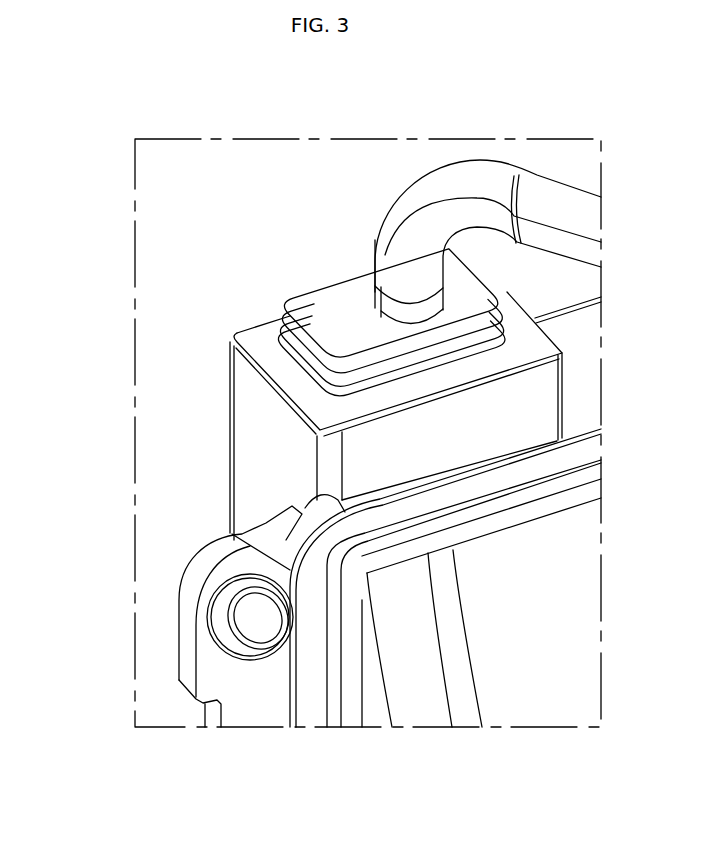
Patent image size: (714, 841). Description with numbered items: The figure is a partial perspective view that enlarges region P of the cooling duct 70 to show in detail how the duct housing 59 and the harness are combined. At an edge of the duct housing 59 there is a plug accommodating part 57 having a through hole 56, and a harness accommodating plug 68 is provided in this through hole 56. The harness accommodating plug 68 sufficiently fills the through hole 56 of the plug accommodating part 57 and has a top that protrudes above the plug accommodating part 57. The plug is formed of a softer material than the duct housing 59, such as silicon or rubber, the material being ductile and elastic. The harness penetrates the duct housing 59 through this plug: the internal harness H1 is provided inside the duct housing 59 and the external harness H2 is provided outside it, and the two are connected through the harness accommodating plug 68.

The through hole 56 is at (290, 345).
The plug accommodating part 57 is at (258, 417).
The harness accommodating plug 68 is at (312, 356).
The duct housing 59 is at (170, 616).
The cooling duct 70 is at (200, 716).
The internal harness H1 is at (426, 705).
The external harness H2 is at (485, 180).
The region P is at (169, 101).